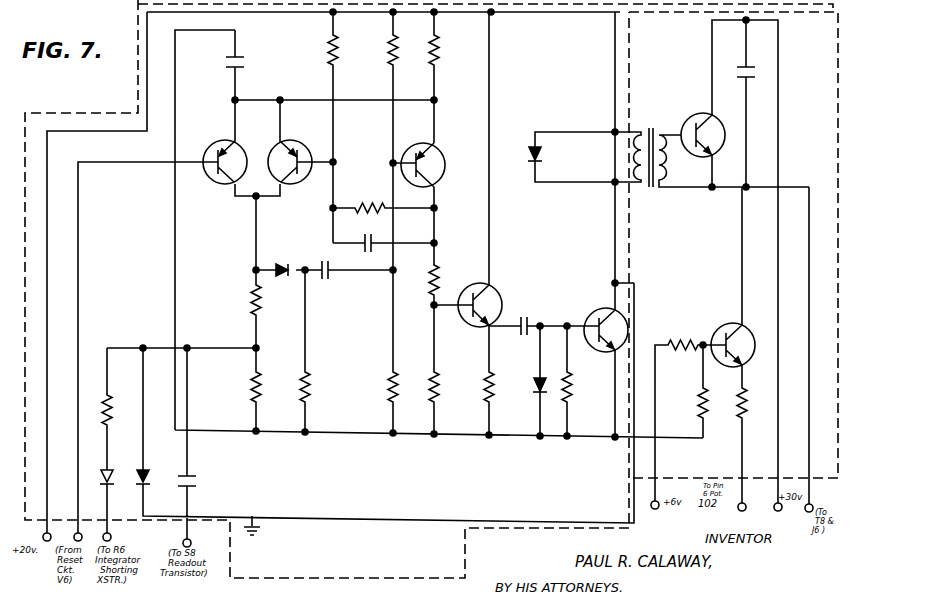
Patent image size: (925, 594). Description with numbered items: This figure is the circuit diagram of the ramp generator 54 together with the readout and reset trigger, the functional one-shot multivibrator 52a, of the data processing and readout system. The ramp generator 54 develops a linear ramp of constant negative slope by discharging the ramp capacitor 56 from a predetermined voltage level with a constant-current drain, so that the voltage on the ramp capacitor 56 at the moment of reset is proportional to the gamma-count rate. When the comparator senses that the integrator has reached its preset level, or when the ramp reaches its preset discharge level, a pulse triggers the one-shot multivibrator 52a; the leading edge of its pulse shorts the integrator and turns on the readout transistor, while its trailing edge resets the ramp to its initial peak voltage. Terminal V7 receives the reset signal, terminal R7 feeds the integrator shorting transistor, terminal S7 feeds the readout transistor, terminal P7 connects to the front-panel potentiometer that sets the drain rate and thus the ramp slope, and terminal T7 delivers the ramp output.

The functional one-shot multivibrator 52a is at (429, 289).
The ramp generator 54 is at (733, 248).
The ramp capacitor 56 is at (749, 76).
The reset input terminal V7 is at (84, 531).
The integrator shorting transistor output terminal R7 is at (115, 532).
The readout transistor output terminal S7 is at (195, 538).
The potentiometer terminal P7 is at (731, 508).
The ramp output terminal T7 is at (822, 498).